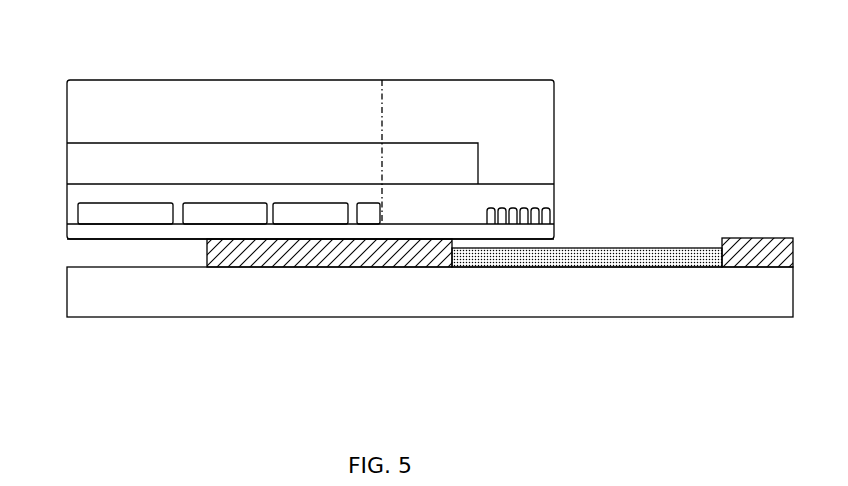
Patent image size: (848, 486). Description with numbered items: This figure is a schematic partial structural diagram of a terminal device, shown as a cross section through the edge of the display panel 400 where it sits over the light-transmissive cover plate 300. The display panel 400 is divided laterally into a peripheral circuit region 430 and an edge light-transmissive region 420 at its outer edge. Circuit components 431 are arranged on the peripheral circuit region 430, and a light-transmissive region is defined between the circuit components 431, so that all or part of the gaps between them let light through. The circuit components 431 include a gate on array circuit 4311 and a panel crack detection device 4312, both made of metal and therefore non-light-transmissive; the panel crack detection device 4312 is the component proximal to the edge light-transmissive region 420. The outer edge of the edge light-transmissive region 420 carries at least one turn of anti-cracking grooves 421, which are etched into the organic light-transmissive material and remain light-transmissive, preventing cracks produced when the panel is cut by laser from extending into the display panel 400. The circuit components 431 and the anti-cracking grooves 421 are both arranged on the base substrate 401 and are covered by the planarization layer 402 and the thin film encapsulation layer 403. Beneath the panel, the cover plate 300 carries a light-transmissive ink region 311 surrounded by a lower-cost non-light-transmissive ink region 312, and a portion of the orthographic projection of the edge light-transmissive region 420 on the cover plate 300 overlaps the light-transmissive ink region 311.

The light-transmissive cover plate 300 is at (112, 300).
The light-transmissive ink region 311 is at (592, 255).
The non-light-transmissive ink region 312 is at (442, 255).
The display panel 400 is at (57, 142).
The base substrate 401 is at (553, 235).
The planarization layer 402 is at (499, 203).
The thin film encapsulation layer 403 is at (470, 170).
The edge light-transmissive region 420 is at (553, 81).
The anti-cracking groove 421 is at (548, 208).
The peripheral circuit region 430 is at (380, 81).
The circuit components 431 is at (287, 369).
The gate on array circuit 4311 is at (287, 217).
The panel crack detection device 4312 is at (367, 217).